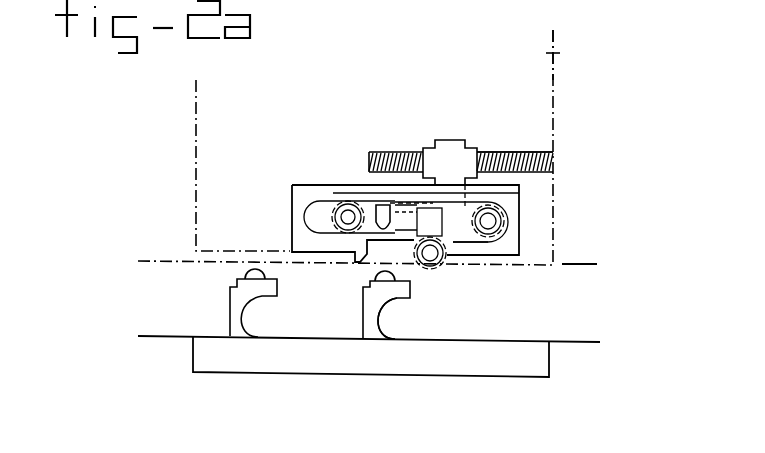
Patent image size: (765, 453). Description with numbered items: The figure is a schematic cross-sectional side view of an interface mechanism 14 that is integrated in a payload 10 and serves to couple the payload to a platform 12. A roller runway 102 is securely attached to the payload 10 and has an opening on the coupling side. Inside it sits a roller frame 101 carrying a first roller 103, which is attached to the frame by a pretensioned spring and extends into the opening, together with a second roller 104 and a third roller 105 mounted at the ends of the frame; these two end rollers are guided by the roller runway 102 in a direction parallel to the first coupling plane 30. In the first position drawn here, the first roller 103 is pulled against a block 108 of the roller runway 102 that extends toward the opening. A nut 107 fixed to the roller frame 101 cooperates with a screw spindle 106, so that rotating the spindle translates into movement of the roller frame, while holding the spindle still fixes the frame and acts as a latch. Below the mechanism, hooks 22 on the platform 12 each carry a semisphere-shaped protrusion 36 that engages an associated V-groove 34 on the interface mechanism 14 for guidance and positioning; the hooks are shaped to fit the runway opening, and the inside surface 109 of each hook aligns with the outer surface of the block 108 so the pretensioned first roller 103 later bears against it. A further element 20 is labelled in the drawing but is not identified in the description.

The payload 10 is at (553, 53).
The platform 12 is at (538, 368).
The interface mechanism 14 is at (510, 128).
The carriage assembly 20 is at (311, 179).
The hook 22 is at (230, 302).
The first coupling plane 30 is at (575, 263).
The V-groove 34 is at (378, 206).
The semisphere shaped protrusion 36 is at (243, 272).
The roller frame 101 is at (468, 233).
The roller runway 102 is at (292, 197).
The first roller 103 is at (442, 268).
The second roller 104 is at (503, 221).
The third roller 105 is at (346, 202).
The screw spindle 106 is at (492, 150).
The nut 107 is at (448, 140).
The block 108 is at (418, 206).
The inside surface 109 is at (402, 317).